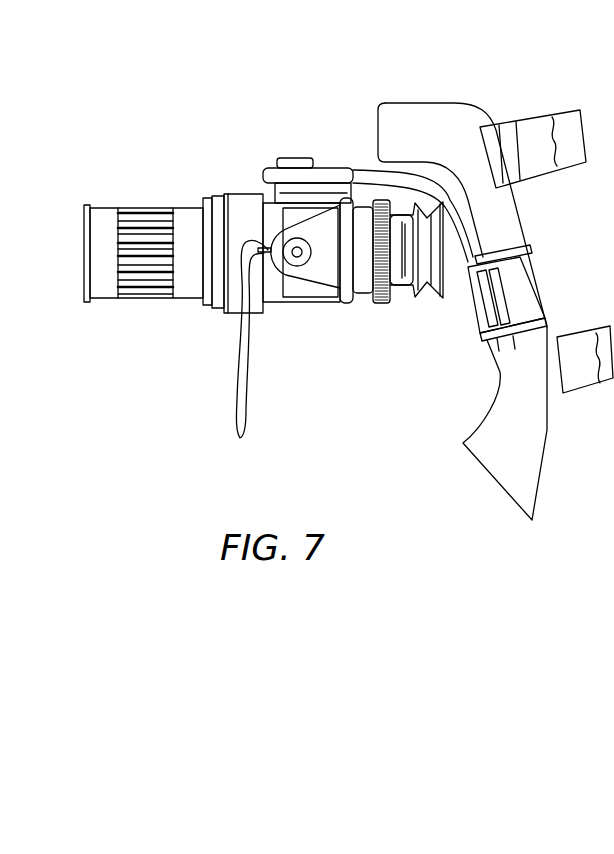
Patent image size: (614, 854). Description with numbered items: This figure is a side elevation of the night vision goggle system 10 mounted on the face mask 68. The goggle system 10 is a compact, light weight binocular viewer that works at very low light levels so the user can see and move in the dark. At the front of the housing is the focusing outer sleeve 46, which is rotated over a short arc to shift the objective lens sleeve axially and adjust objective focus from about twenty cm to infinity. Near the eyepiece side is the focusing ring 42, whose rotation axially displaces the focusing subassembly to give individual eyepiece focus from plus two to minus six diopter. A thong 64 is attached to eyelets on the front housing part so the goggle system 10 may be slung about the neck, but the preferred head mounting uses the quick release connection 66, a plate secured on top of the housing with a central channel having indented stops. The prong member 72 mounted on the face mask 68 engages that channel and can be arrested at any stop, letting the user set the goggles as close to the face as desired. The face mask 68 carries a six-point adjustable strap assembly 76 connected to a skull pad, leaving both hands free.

The night vision goggle system 10 is at (241, 192).
The focusing outer sleeve 46 is at (135, 212).
The quick release connection 66 is at (315, 192).
The prong member 72 is at (368, 178).
The focusing ring 42 is at (380, 304).
The thong 64 is at (242, 352).
The face mask 68 is at (436, 96).
The six-point adjustable strap assembly 76 is at (575, 160).